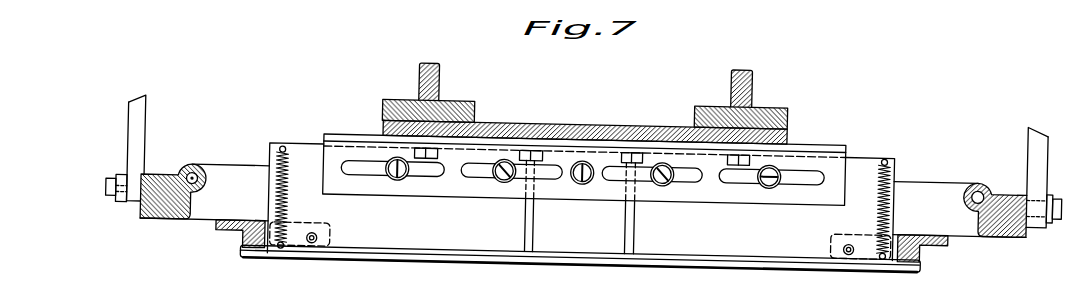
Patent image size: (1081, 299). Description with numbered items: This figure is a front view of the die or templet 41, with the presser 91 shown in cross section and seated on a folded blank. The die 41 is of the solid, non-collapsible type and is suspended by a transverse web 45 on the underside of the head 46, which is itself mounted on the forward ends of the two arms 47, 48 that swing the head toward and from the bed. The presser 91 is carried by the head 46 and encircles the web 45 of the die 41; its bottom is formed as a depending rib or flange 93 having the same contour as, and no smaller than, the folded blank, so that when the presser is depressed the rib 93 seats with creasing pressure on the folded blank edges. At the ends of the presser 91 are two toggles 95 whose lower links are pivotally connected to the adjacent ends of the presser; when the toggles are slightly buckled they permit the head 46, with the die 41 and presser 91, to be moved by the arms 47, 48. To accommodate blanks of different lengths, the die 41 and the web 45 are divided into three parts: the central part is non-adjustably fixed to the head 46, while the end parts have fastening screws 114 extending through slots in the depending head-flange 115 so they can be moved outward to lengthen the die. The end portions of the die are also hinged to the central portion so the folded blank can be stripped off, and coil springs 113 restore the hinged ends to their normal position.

The die or templet 41 is at (390, 251).
The transverse web 45 is at (572, 241).
The head 46 is at (587, 121).
The arm 47 is at (439, 62).
The arm 48 is at (730, 63).
The presser 91 is at (232, 174).
The depending rib or flange 93 is at (238, 235).
The toggle 95 is at (145, 123).
The coil spring 113 is at (285, 168).
The fastening screw 114 is at (405, 176).
The depending head-flange 115 is at (555, 192).